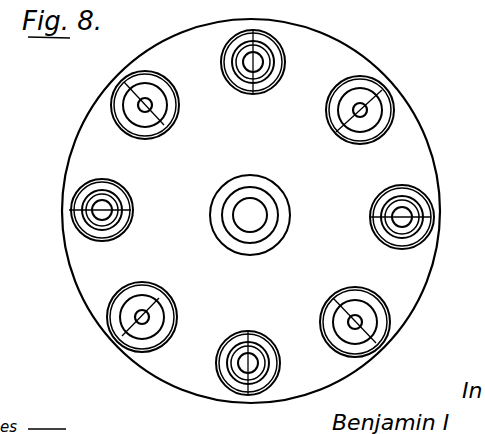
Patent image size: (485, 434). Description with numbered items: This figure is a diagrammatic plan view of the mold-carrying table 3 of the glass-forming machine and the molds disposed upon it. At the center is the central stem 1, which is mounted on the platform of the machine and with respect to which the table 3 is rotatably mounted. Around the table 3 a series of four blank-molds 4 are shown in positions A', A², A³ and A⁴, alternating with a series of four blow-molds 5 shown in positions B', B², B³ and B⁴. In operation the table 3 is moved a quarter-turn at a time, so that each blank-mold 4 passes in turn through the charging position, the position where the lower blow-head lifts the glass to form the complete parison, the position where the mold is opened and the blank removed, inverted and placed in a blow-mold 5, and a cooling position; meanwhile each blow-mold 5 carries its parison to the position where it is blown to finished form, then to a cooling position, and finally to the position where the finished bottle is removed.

The central stem 1 is at (246, 236).
The table 3 is at (176, 377).
The blank-molds 4 is at (276, 56).
The blow-molds 5 is at (152, 103).